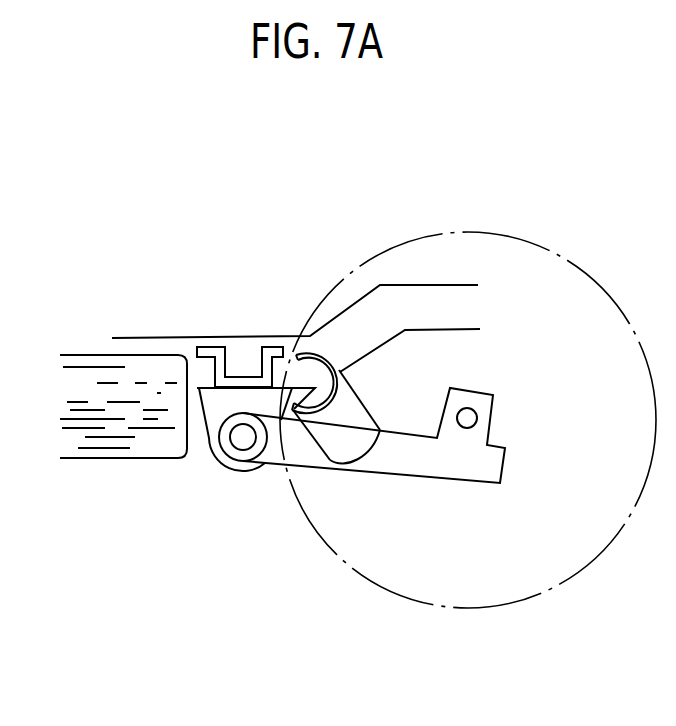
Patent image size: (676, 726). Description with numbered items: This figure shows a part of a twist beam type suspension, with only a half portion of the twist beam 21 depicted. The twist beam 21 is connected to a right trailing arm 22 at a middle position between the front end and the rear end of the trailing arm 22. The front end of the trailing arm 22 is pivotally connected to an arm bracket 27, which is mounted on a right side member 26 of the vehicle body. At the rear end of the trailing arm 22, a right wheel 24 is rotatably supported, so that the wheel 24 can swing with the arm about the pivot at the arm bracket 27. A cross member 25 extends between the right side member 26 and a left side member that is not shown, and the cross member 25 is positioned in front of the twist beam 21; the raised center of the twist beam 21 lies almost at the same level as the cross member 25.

The twist beam 21 is at (358, 440).
The right trailing arm 22 is at (296, 460).
The right wheel 24 is at (517, 262).
The cross member 25 is at (229, 358).
The right side member 26 is at (393, 292).
The arm bracket 27 is at (212, 417).